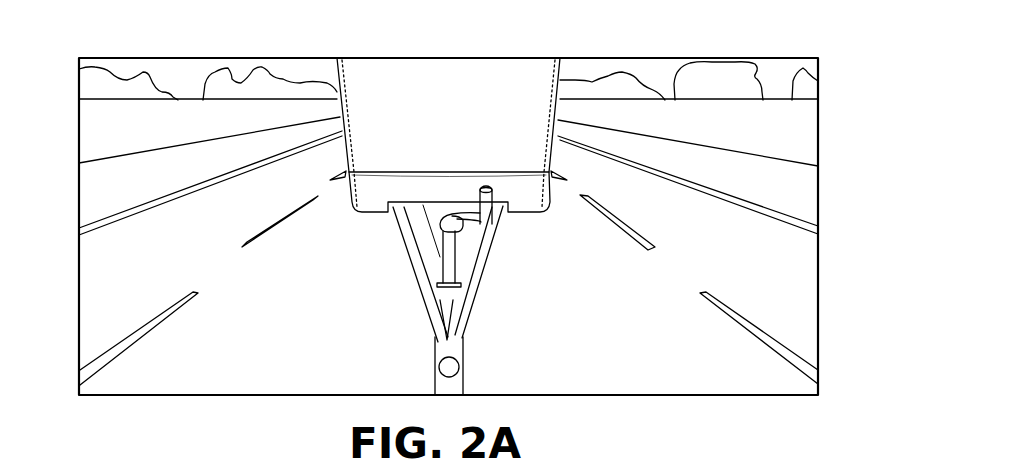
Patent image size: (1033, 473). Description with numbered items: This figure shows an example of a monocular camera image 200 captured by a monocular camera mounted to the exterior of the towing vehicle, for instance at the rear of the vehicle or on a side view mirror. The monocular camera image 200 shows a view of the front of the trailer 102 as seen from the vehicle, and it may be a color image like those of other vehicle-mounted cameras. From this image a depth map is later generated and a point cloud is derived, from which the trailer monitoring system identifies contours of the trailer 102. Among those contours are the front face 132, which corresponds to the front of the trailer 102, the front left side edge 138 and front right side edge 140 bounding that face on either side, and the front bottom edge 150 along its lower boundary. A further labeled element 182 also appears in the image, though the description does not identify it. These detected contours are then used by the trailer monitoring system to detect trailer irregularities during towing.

The monocular camera image 200 is at (818, 126).
The trailer 102 is at (567, 80).
The front face 132 is at (449, 147).
The front left side edge 138 is at (558, 137).
The front right side edge 140 is at (338, 114).
The front bottom edge 150 is at (405, 248).
The hitch ball 182 is at (560, 329).